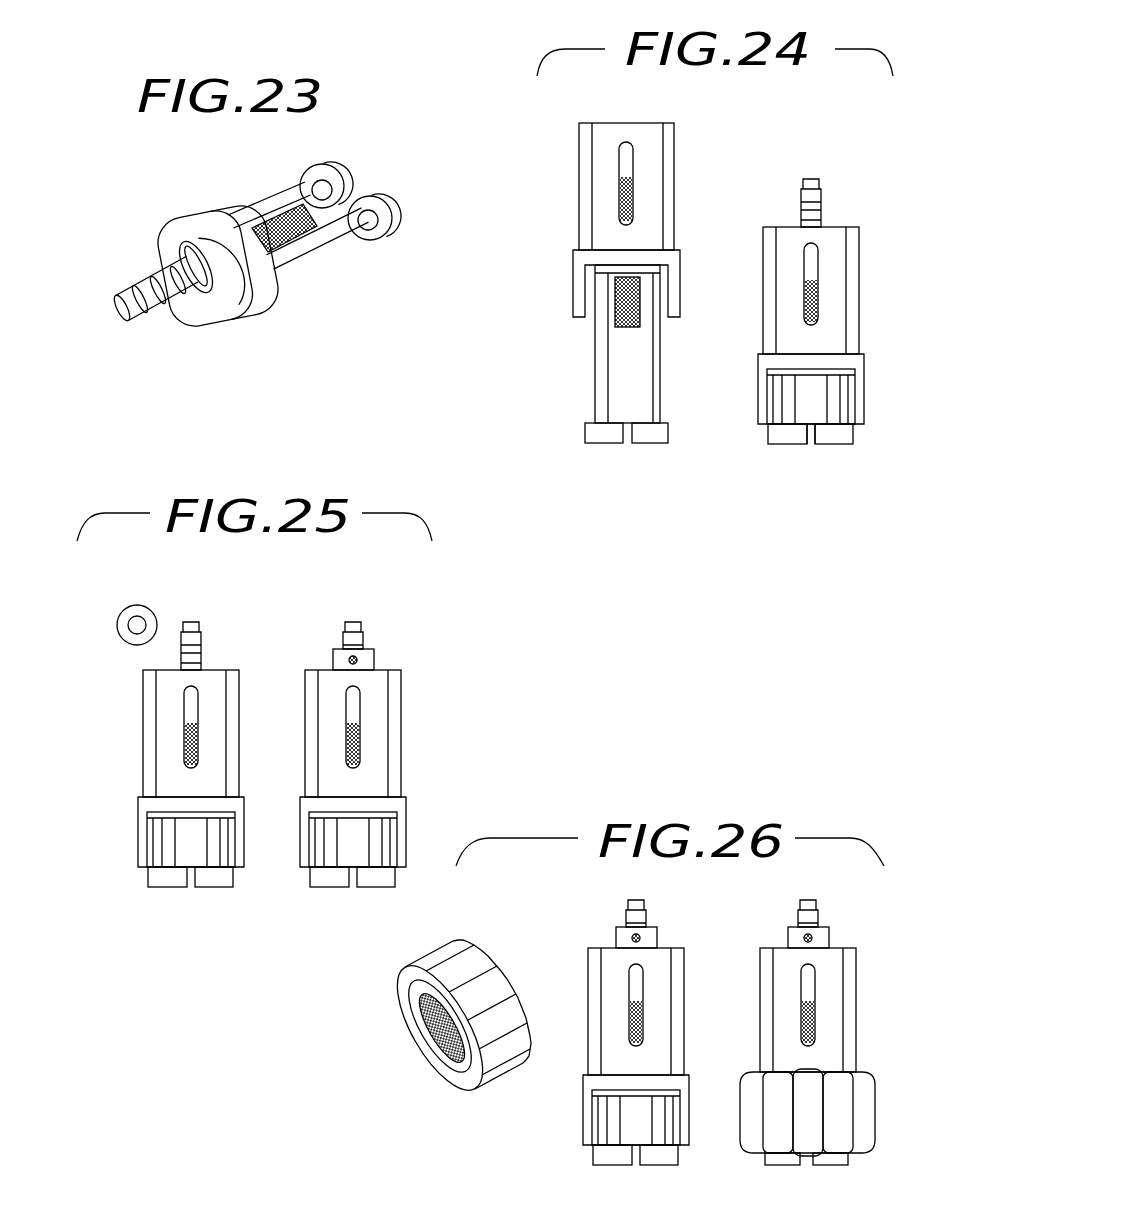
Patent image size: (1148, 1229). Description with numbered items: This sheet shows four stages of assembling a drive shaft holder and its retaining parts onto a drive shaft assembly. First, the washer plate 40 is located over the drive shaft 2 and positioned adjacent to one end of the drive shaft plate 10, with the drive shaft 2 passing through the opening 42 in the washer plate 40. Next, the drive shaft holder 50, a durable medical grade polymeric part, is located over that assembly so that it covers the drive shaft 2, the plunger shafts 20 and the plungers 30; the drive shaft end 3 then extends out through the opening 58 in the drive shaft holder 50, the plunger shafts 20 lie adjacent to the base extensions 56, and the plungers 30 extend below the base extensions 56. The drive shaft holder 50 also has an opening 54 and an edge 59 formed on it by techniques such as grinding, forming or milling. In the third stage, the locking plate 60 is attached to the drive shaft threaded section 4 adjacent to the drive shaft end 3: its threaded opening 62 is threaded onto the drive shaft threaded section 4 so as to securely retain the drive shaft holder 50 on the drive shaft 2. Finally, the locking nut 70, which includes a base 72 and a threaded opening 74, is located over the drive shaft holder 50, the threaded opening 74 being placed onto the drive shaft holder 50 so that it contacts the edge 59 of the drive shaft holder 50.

In FIG. 23, the drive shaft 2 is at (132, 298).
In FIG. 24, the drive shaft 2 is at (797, 193).
In FIG. 25, the drive shaft 2 is at (341, 630).
In FIG. 24, the drive shaft end 3 is at (837, 294).
In FIG. 25, the drive shaft end 3 is at (310, 726).
In FIG. 25, the drive shaft threaded section 4 is at (205, 657).
In FIG. 23, the drive shaft plate 10 is at (228, 276).
In FIG. 24, the plunger shafts 20 is at (598, 370).
In FIG. 24, the plungers 30 is at (590, 455).
In FIG. 23, the washer plate 40 is at (234, 322).
In FIG. 23, the opening 42 is at (213, 293).
In FIG. 24, the drive shaft holder 50 is at (683, 158).
In FIG. 25, the drive shaft holder 50 is at (425, 718).
In FIG. 26, the drive shaft holder 50 is at (707, 1057).
In FIG. 24, the opening 54 is at (810, 447).
In FIG. 24, the base extensions 56 is at (863, 400).
In FIG. 24, the opening 58 is at (817, 260).
In FIG. 26, the edge 59 is at (580, 1078).
In FIG. 25, the locking plate 60 is at (372, 660).
In FIG. 25, the threaded opening 62 is at (124, 620).
In FIG. 26, the locking nut 70 is at (387, 1021).
In FIG. 26, the base 72 is at (880, 1112).
In FIG. 26, the threaded opening 74 is at (413, 1057).